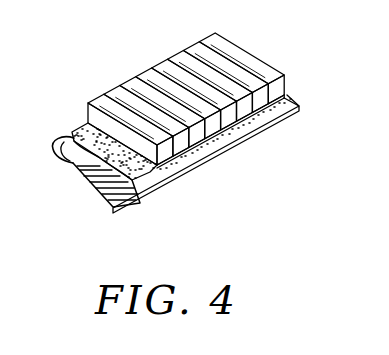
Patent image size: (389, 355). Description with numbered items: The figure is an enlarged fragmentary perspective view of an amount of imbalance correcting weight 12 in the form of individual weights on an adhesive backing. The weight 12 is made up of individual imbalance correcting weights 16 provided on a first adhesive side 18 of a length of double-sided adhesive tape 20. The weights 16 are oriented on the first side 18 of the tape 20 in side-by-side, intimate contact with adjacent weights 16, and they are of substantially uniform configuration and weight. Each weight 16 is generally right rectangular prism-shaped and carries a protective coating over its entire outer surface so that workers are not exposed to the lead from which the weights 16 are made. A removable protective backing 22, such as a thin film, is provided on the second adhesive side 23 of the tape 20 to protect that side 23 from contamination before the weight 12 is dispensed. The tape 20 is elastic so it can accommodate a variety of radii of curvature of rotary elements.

The imbalance correcting weight 12 is at (86, 94).
The individual imbalance correcting weights 16 is at (172, 57).
The first adhesive side 18 is at (153, 160).
The double-sided adhesive tape 20 is at (68, 164).
The removable protective backing 22 is at (65, 145).
The second adhesive side 23 is at (193, 150).